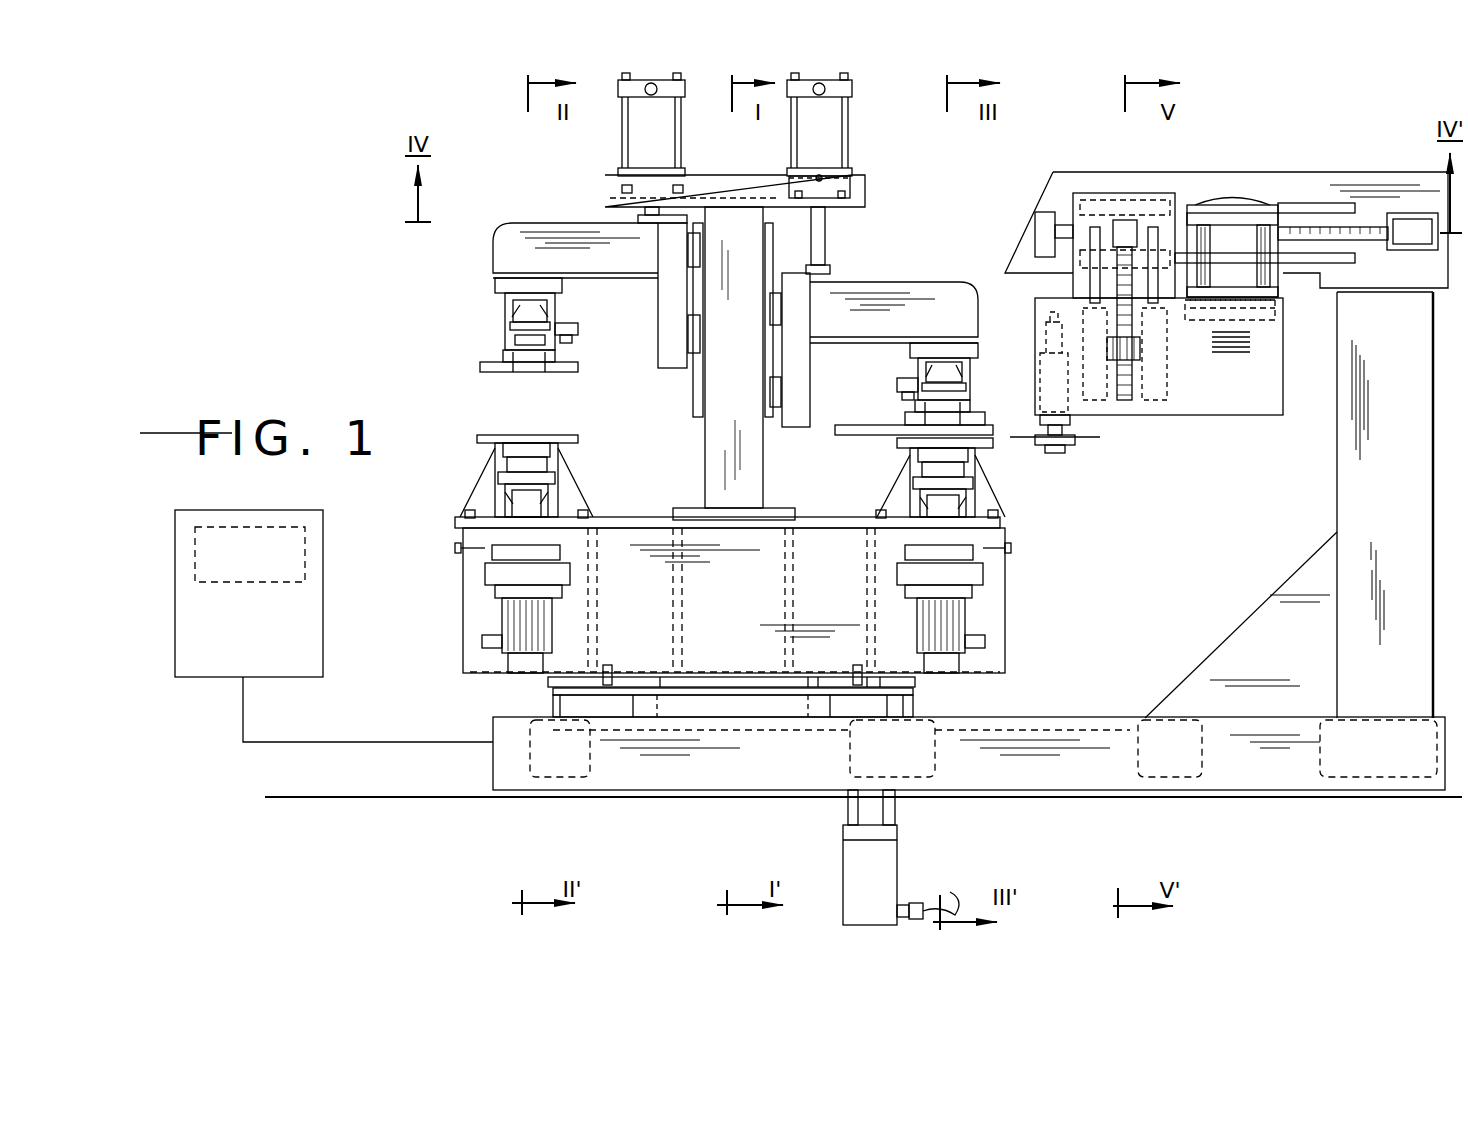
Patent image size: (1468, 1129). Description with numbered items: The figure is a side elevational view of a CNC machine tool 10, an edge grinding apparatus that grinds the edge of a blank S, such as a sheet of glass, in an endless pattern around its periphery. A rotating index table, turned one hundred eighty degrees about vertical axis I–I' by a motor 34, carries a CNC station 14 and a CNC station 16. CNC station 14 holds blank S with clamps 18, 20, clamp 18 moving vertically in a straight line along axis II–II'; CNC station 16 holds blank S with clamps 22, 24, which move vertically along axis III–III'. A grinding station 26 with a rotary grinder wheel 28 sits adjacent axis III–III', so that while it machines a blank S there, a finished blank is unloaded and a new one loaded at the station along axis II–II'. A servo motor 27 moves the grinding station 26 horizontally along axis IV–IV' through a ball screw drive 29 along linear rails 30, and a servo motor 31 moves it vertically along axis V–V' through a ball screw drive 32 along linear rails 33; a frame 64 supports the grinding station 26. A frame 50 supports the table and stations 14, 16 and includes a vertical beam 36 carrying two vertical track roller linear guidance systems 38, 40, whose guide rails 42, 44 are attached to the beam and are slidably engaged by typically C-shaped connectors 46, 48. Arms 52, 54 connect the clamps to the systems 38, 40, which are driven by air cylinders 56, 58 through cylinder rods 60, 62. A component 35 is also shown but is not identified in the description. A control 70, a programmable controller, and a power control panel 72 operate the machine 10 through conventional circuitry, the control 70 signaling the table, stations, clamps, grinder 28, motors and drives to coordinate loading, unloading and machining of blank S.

The CNC machine tool 10 is at (325, 310).
The CNC station 14 is at (493, 450).
The CNC station 16 is at (985, 464).
The clamp 18 is at (480, 364).
The clamp 20 is at (480, 437).
The clamp 22 is at (900, 410).
The clamp 24 is at (897, 446).
The grinding station 26 is at (1150, 415).
The servo motor 27 is at (1412, 213).
The rotary grinder wheel 28 is at (1075, 452).
The ball screw drive 29 is at (1300, 225).
The linear rails 30 is at (1340, 207).
The servo motor 31 is at (1110, 225).
The ball screw drive 32 is at (1138, 345).
The linear rails 33 is at (1092, 228).
The motor 34 is at (500, 623).
The actuators 35 is at (1215, 205).
The vertical beam 36 is at (705, 458).
The vertical track roller linear guidance system 38 is at (665, 307).
The vertical track roller linear guidance system 40 is at (795, 428).
The guide rail 42 is at (693, 392).
The guide rail 44 is at (775, 258).
The connector 46 is at (696, 250).
The connector 48 is at (770, 312).
The frame 50 is at (505, 735).
The arm 52 is at (505, 254).
The arm 54 is at (930, 297).
The air cylinder 56 is at (637, 140).
The air cylinder 58 is at (822, 130).
The cylinder rod 60 is at (643, 213).
The cylinder rod 62 is at (828, 232).
The frame 64 is at (1366, 499).
The control 70 is at (230, 527).
The power control panel 72 is at (322, 540).
The blank S is at (848, 428).